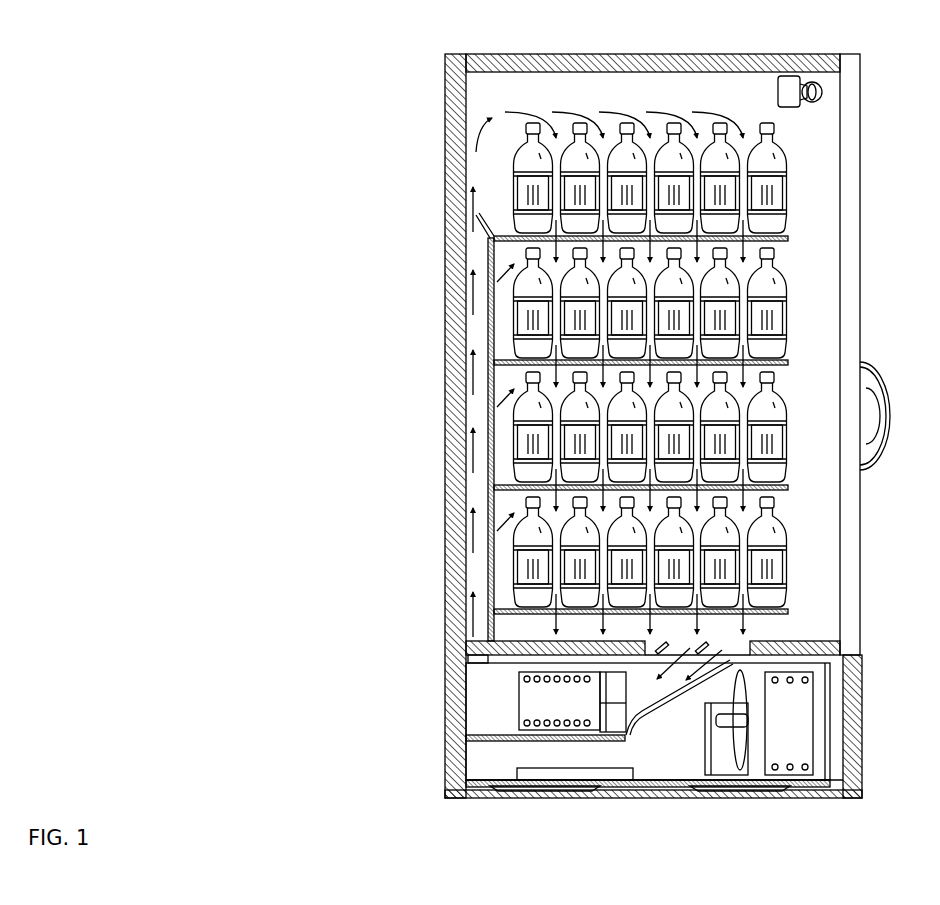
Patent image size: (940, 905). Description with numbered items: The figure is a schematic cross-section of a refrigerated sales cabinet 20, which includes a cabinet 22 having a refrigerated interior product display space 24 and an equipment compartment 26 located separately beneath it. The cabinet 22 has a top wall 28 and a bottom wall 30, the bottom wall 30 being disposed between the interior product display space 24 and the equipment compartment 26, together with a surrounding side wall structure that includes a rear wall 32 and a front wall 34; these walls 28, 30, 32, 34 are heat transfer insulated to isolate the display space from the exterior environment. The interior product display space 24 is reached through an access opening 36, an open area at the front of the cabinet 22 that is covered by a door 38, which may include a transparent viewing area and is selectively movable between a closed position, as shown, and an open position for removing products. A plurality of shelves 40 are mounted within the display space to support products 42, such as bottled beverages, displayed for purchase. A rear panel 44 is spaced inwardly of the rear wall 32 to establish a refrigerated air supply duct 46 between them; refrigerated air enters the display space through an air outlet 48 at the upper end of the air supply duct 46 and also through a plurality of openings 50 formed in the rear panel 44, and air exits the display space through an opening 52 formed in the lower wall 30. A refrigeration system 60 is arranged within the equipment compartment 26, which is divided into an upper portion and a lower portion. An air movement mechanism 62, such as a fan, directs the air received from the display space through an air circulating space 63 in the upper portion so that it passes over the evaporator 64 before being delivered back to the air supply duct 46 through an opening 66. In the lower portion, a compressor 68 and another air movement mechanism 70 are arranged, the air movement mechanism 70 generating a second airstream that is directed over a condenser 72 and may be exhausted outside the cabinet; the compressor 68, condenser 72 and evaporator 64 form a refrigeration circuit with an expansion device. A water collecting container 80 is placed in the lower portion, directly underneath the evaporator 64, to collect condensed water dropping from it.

The refrigerated sales cabinet 20 is at (428, 118).
The cabinet 22 is at (440, 690).
The refrigerated interior product display space 24 is at (512, 314).
The equipment compartment 26 is at (485, 745).
The top wall 28 is at (598, 54).
The bottom wall 30 is at (813, 640).
The rear wall 32 is at (442, 447).
The front wall 34 is at (862, 782).
The access opening 36 is at (833, 275).
The door 38 is at (860, 498).
The shelves 40 is at (786, 240).
The products 42 is at (510, 336).
The rear panel 44 is at (490, 560).
The refrigerated air supply duct 46 is at (472, 497).
The air outlet 48 is at (477, 214).
The openings 50 is at (480, 418).
The opening 52 is at (703, 657).
The refrigeration system 60 is at (487, 726).
The air movement mechanism 62 is at (633, 718).
The air circulating space 63 is at (492, 700).
The evaporator 64 is at (559, 701).
The opening 66 is at (477, 656).
The compressor 68 is at (702, 753).
The air movement mechanism 70 is at (730, 748).
The condenser 72 is at (762, 690).
The water collecting container 80 is at (600, 768).